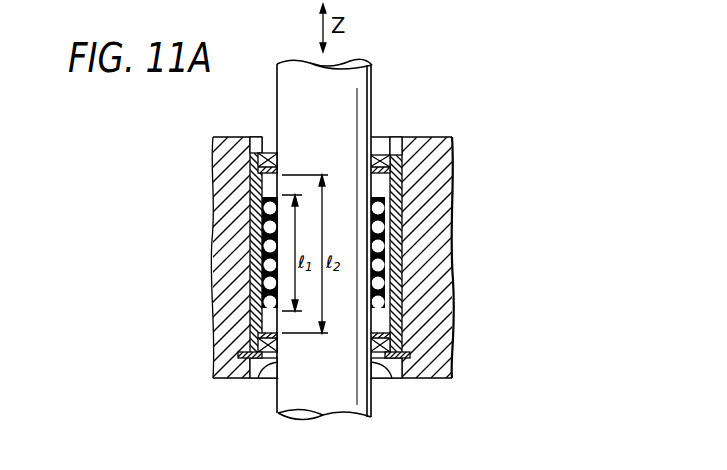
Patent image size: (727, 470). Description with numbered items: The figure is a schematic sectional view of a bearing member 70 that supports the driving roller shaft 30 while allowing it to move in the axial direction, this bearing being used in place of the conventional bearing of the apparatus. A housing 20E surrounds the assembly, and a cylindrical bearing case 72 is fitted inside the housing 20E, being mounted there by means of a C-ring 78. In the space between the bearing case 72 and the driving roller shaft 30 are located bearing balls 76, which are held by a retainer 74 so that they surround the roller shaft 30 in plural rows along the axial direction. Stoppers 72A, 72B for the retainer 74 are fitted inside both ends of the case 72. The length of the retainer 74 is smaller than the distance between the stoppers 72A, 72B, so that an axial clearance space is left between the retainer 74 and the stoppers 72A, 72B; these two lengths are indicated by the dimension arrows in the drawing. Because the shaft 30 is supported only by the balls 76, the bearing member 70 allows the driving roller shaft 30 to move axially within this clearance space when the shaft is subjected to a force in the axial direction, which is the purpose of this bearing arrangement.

The driving roller shaft 30 is at (360, 110).
The housing 20E is at (455, 223).
The bearing member 70 is at (492, 292).
The cylindrical bearing case 72 is at (400, 305).
The stopper 72A is at (260, 190).
The stopper 72B is at (400, 340).
The retainer 74 is at (265, 336).
The bearing balls 76 is at (266, 268).
The C-ring 78 is at (262, 380).